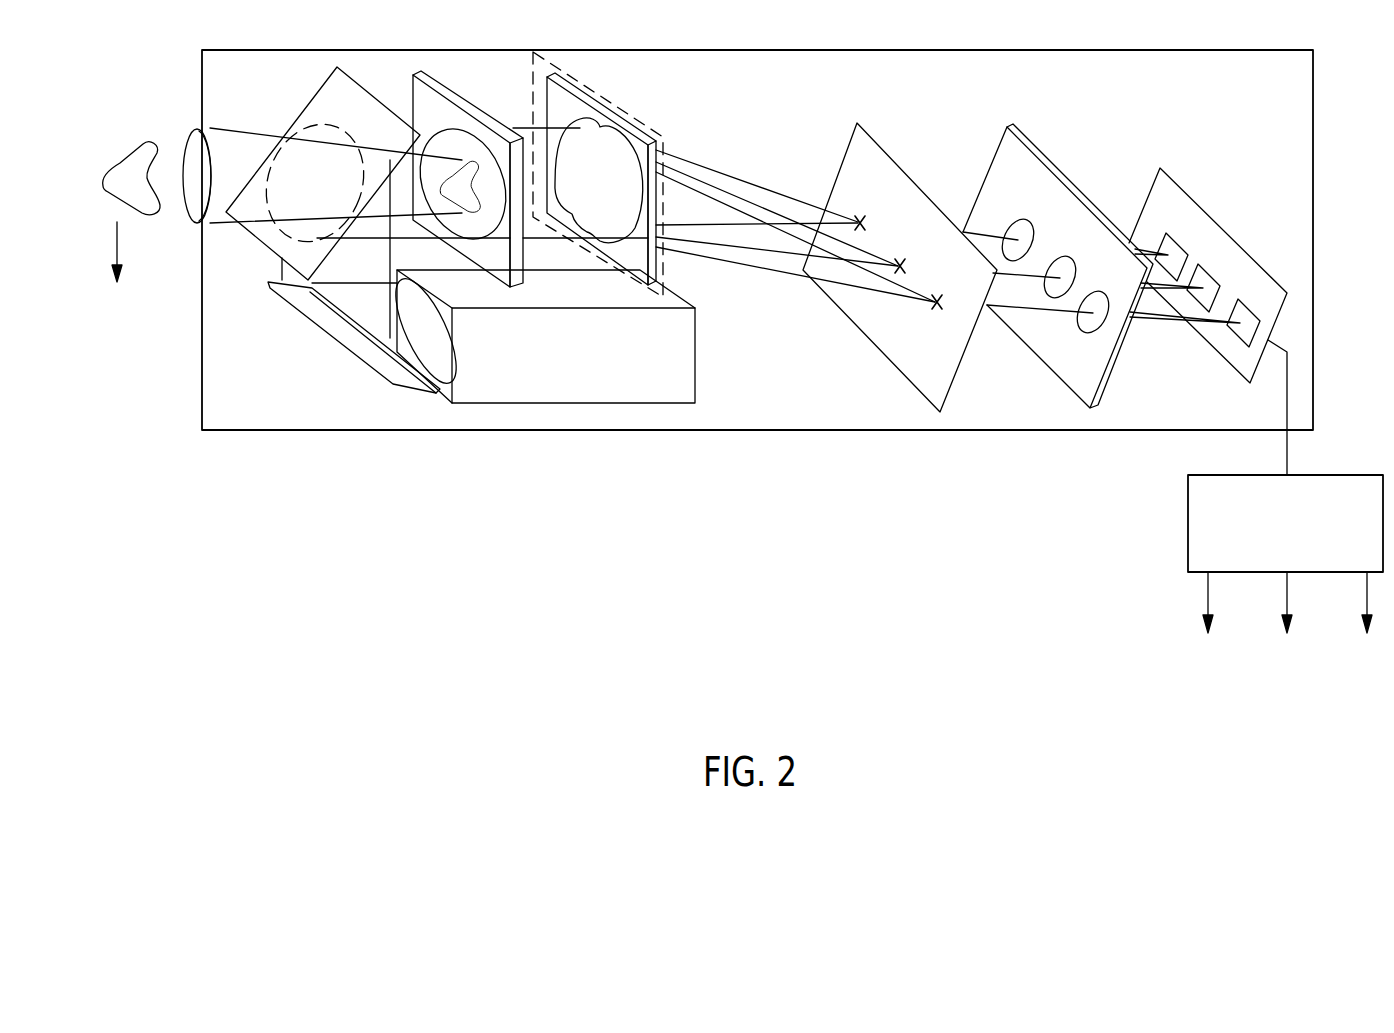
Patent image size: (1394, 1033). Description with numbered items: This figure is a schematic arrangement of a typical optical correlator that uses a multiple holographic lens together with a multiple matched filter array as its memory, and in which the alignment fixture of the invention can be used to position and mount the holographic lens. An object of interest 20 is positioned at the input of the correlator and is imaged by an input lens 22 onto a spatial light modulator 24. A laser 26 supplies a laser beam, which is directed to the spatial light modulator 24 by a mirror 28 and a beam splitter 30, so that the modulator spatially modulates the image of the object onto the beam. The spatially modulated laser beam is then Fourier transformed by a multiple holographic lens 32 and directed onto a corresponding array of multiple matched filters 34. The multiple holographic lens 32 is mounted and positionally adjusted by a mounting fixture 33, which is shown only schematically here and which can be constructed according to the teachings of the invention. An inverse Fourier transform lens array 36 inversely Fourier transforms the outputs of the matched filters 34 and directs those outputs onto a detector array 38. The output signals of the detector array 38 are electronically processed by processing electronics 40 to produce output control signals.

The object of interest 20 is at (112, 197).
The input lens 22 is at (202, 128).
The spatial light modulator 24 is at (437, 78).
The laser 26 is at (648, 375).
The mirror 28 is at (305, 320).
The beam splitter 30 is at (317, 83).
The multiple holographic lens 32 is at (562, 82).
The mounting fixture 33 is at (660, 138).
The array of multiple matched filters 34 is at (1063, 68).
The inverse Fourier transform lens array 36 is at (1047, 155).
The detector array 38 is at (1197, 337).
The processing electronics 40 is at (1305, 560).